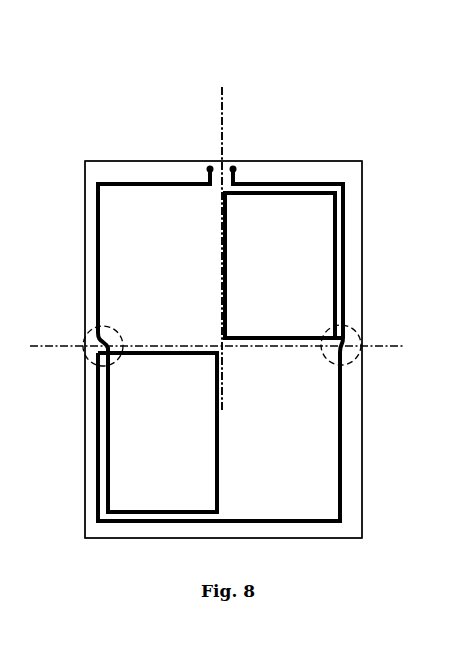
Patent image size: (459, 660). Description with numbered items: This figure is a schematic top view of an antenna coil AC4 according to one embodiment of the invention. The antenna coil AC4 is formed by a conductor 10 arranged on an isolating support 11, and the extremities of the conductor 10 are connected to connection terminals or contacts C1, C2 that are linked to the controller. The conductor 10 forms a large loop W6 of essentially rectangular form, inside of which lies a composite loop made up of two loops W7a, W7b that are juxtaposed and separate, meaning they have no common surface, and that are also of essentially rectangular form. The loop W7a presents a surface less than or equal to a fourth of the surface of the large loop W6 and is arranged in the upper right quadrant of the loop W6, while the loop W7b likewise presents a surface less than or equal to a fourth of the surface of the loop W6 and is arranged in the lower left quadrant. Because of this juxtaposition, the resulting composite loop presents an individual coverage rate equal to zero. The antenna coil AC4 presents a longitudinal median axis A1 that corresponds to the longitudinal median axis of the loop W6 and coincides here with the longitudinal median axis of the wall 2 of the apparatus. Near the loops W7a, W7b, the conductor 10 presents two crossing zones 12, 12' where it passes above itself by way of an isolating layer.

The wall 2 is at (85, 272).
The isolating support 11 is at (223, 349).
The conductor 10 is at (130, 182).
The antenna coil AC4 is at (93, 221).
The longitudinal median axis A1 is at (224, 97).
The large loop W6 is at (345, 288).
The loop W7a is at (337, 247).
The loop W7b is at (218, 483).
The connection terminal C1 is at (210, 166).
The connection terminal C2 is at (233, 166).
The crossing zone 12 is at (360, 335).
The crossing zone 12' is at (82, 358).